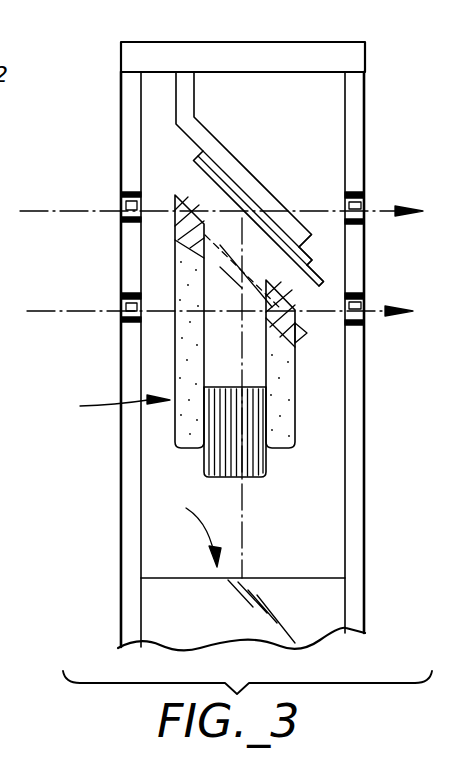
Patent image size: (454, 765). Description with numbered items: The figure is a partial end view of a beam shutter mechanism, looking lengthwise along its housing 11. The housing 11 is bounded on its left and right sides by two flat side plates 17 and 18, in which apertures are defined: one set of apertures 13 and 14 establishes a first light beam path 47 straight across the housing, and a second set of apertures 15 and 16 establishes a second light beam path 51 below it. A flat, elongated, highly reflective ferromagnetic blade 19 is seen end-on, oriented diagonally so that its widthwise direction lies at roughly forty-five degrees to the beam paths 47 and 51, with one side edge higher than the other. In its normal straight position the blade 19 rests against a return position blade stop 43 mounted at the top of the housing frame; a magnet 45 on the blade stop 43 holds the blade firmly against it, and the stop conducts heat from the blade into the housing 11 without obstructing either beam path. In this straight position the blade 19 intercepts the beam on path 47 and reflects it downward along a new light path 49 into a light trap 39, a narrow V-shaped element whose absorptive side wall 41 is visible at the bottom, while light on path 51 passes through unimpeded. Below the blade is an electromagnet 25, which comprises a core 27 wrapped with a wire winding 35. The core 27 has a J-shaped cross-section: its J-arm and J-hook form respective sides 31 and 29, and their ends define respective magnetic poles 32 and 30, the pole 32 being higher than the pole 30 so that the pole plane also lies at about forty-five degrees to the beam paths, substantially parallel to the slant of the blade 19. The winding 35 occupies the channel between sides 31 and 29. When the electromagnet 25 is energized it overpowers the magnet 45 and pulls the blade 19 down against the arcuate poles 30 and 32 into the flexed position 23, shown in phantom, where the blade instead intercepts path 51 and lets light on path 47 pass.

The housing 11 is at (288, 43).
The aperture 13 is at (122, 215).
The aperture 14 is at (366, 196).
The aperture 15 is at (122, 316).
The aperture 16 is at (363, 300).
The side plate 17 is at (132, 118).
The side plate 18 is at (363, 85).
The ferromagnetic blade 19 is at (226, 165).
The flexed position 23 is at (233, 182).
The electromagnet 25 is at (108, 408).
The core 27 is at (200, 451).
The J-hook side of core 29 is at (297, 385).
The magnetic pole 30 is at (288, 290).
The J-arm side of core 31 is at (176, 355).
The magnetic pole 32 is at (185, 205).
The wire winding 35 is at (263, 461).
The light trap 39 is at (184, 529).
The absorptive side wall 41 is at (332, 590).
The return position blade stop 43 is at (199, 118).
The magnet 45 is at (310, 228).
The light beam path 47 is at (118, 210).
The new light path 49 is at (244, 498).
The light beam path 51 is at (118, 310).